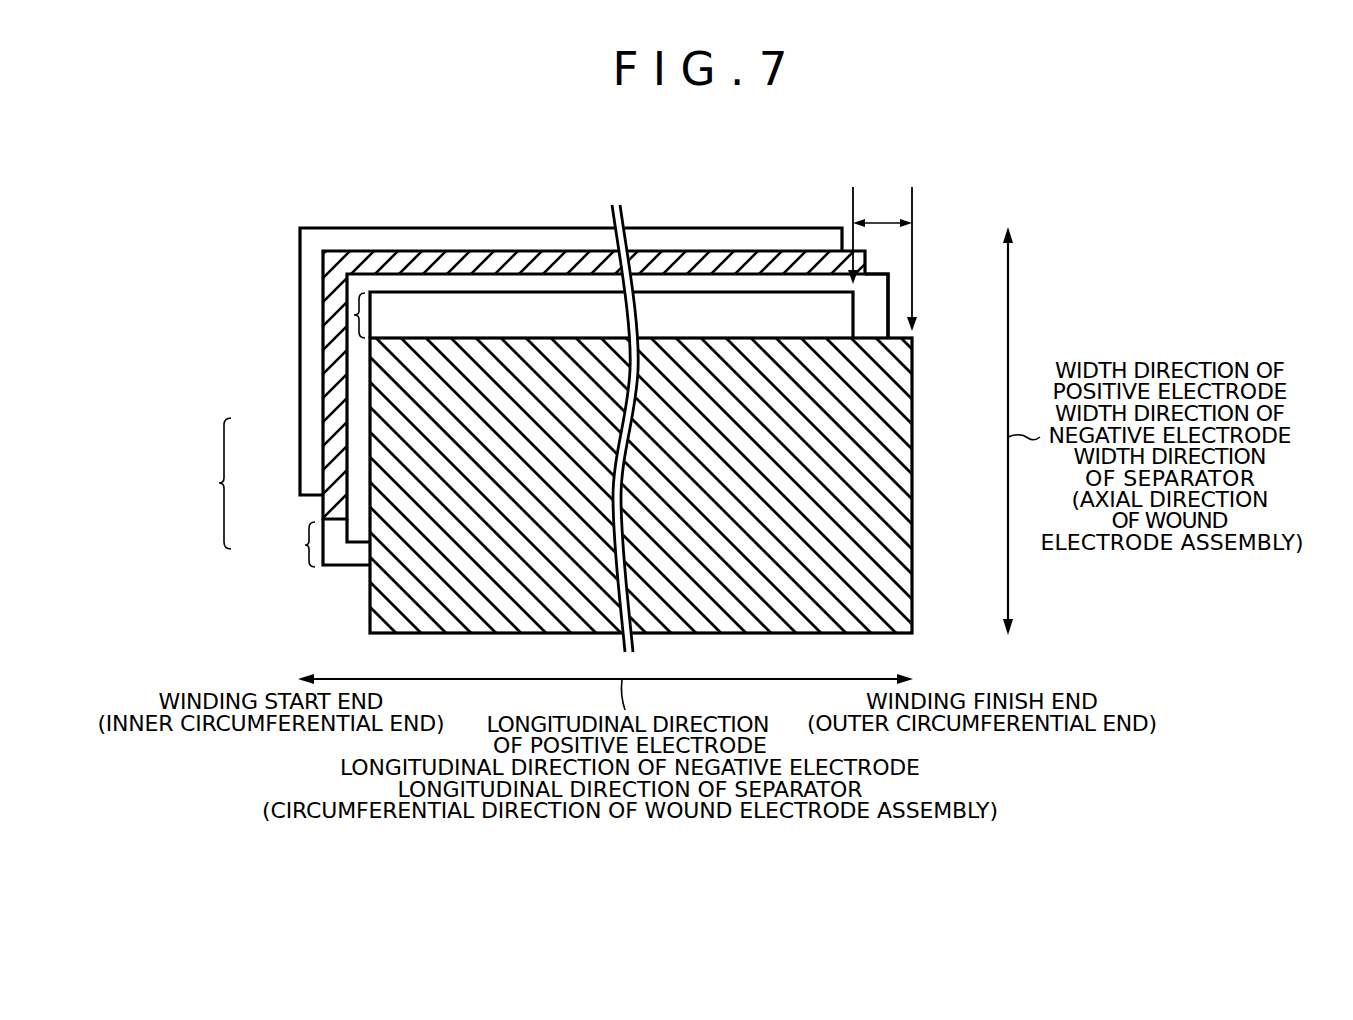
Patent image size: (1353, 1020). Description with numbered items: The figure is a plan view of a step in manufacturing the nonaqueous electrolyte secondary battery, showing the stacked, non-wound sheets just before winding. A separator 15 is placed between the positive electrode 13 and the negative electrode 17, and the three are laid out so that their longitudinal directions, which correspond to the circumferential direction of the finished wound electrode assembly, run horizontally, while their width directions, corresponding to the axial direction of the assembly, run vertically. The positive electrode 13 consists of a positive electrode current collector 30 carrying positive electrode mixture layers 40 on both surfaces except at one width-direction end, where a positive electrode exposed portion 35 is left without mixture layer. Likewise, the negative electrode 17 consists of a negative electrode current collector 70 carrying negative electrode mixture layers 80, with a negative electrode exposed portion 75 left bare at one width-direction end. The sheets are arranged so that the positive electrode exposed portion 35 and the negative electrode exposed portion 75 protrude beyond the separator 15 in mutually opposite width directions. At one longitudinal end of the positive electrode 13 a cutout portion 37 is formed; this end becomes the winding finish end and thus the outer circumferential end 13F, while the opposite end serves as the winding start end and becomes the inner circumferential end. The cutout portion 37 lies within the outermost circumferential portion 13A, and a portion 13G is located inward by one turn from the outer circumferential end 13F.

The positive electrode 13 is at (650, 410).
The outermost circumferential portion 13A is at (881, 221).
The outer circumferential end 13F is at (913, 244).
The portion located inward by one turn 13G is at (852, 221).
The separator 15 is at (378, 240).
The negative electrode 17 is at (631, 410).
The positive electrode current collector 30 is at (682, 307).
The positive electrode exposed portion 35 is at (353, 315).
The cutout portion 37 is at (876, 315).
The positive electrode mixture layer 40 is at (767, 350).
The negative electrode current collector 70 is at (650, 410).
The negative electrode exposed portion 75 is at (305, 547).
The negative electrode mixture layer 80 is at (337, 423).